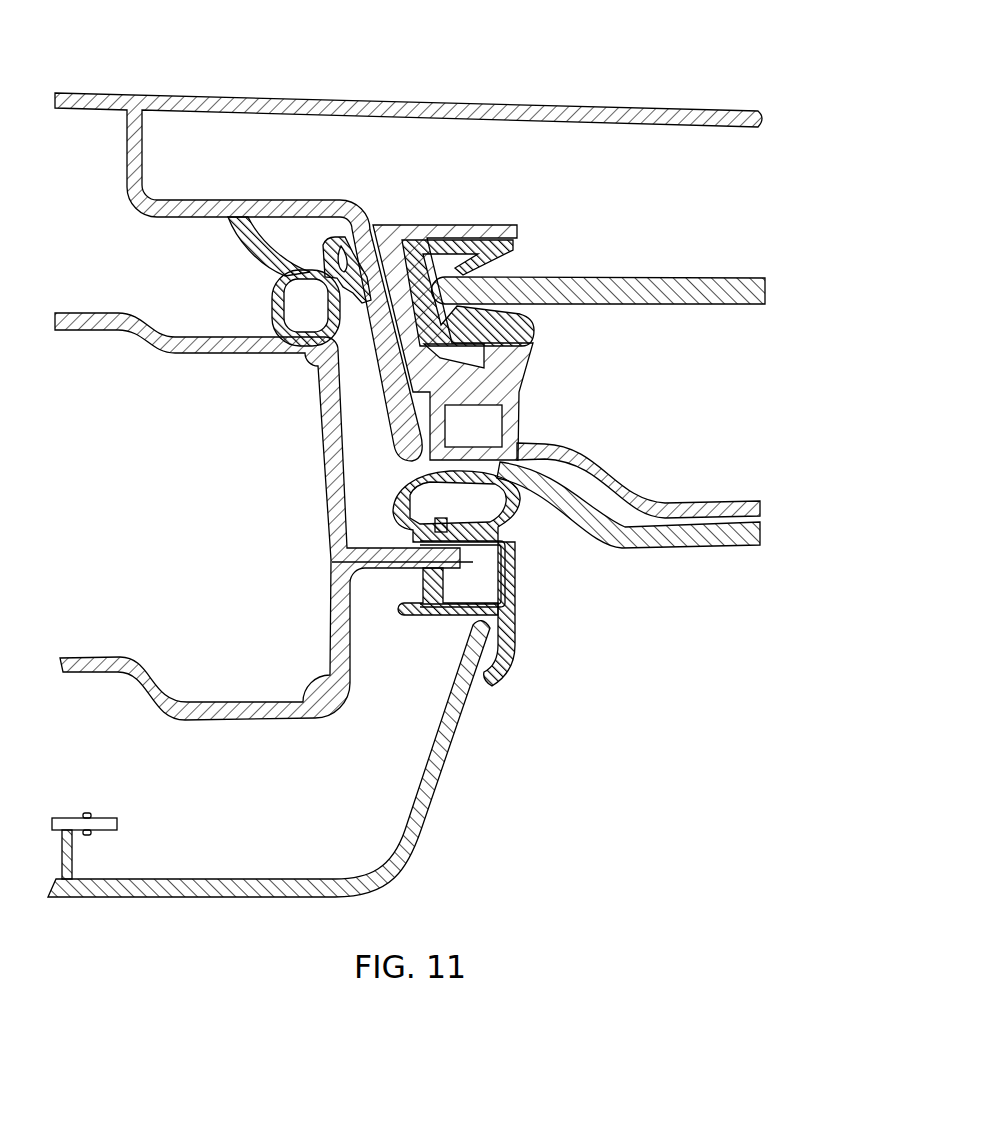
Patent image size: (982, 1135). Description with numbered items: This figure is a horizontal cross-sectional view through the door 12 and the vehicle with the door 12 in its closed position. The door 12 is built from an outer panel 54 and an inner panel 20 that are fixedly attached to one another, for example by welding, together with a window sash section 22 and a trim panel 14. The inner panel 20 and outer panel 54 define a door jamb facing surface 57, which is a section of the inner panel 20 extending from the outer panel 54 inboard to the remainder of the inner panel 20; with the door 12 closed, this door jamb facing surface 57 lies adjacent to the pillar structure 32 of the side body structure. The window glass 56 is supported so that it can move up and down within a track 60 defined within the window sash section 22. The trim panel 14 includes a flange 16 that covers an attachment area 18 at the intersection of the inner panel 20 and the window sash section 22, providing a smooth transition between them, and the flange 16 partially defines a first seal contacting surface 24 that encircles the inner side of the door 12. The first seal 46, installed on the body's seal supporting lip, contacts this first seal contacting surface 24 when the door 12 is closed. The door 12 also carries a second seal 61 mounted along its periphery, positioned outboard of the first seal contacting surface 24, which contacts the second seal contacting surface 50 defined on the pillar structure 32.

The door 12 is at (574, 49).
The trim panel 14 is at (690, 535).
The flange 16 is at (481, 464).
The attachment area 18 is at (419, 455).
The inner panel 20 is at (358, 323).
The window sash section 22 is at (477, 344).
The first seal contacting surface 24 is at (490, 483).
The pillar structure 32 is at (208, 722).
The first seal 46 is at (474, 578).
The second seal contacting surface 50 is at (300, 330).
The outer panel 54 is at (267, 100).
The window glass 56 is at (677, 293).
The door jamb facing surface 57 is at (382, 346).
The track 60 is at (492, 272).
The second seal 61 is at (258, 267).